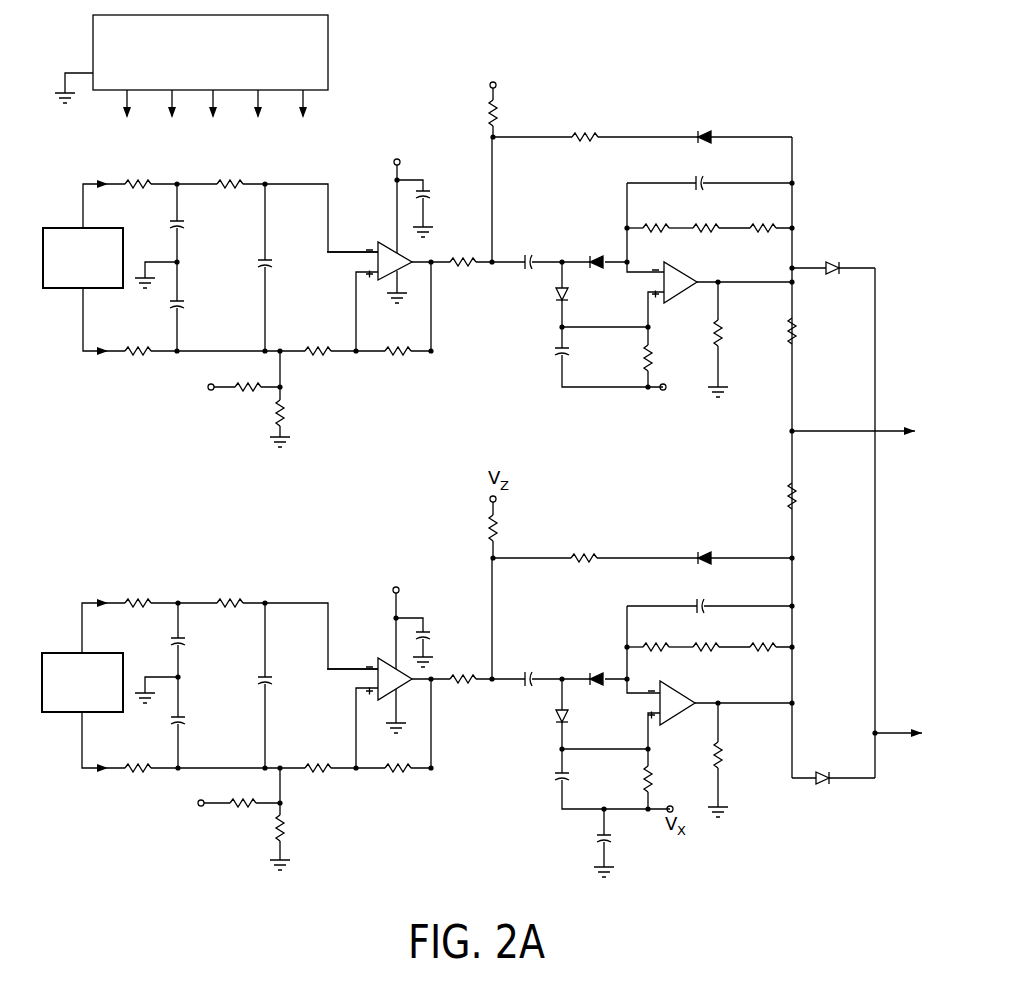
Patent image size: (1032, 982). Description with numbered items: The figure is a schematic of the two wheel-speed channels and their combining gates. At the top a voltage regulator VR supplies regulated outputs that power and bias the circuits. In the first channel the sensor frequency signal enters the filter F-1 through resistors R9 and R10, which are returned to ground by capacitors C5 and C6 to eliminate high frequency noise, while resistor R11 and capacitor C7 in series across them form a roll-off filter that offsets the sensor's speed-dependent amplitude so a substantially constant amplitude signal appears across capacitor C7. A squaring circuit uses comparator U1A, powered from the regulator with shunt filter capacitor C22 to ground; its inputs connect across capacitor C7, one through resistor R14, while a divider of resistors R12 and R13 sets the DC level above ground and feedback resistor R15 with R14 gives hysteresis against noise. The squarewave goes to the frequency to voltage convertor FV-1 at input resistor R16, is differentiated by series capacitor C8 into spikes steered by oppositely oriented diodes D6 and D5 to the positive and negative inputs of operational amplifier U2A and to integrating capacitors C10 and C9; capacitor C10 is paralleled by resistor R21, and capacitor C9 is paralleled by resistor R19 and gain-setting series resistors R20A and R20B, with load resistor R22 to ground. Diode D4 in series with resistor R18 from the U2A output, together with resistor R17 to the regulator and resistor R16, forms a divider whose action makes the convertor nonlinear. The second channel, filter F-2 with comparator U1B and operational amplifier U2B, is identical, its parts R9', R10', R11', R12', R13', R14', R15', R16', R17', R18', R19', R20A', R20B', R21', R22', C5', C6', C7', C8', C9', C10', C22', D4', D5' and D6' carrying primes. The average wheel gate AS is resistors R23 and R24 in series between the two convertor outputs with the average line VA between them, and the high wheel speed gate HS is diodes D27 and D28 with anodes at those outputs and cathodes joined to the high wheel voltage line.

The voltage regulator VR is at (328, 50).
The filter F-1 is at (267, 292).
The filter F-2 is at (267, 698).
The frequency to voltage convertor FV-1 is at (639, 228).
The resistor R9 is at (139, 175).
The resistor R10 is at (138, 362).
The resistor R11 is at (231, 175).
The resistor R12 is at (297, 399).
The resistor R13 is at (244, 398).
The resistor R14 is at (318, 362).
The resistor R15 is at (393, 362).
The input resistor R16 is at (461, 304).
The resistor R17 is at (513, 112).
The resistor R18 is at (595, 149).
The resistor R19 is at (648, 217).
The series resistor R20A is at (694, 217).
The series resistor R20B is at (755, 217).
The resistor R21 is at (668, 357).
The resistor R22 is at (736, 339).
The resistor R23 is at (812, 331).
The resistor R24 is at (812, 496).
The capacitor C5 is at (190, 223).
The capacitor C6 is at (190, 306).
The capacitor C7 is at (278, 267).
The series capacitor C8 is at (527, 272).
The integrating capacitor C9 is at (709, 170).
The integrating capacitor C10 is at (609, 357).
The shunt filter capacitor C22 is at (433, 208).
The diode D4 is at (742, 125).
The steering diode D5 is at (594, 251).
The steering diode D6 is at (577, 294).
The diode D27 is at (832, 256).
The diode D28 is at (833, 794).
The comparator U1A is at (379, 258).
The operational amplifier U2A is at (720, 294).
The comparator U1B is at (379, 680).
The operational amplifier U2B is at (720, 715).
The resistor R9' is at (141, 594).
The resistor R10' is at (139, 779).
The resistor R11' is at (234, 594).
The resistor R12' is at (300, 819).
The resistor R13' is at (239, 814).
The resistor R14' is at (318, 779).
The resistor R15' is at (393, 779).
The input resistor R16' is at (461, 721).
The resistor R17' is at (515, 530).
The resistor R18' is at (595, 570).
The resistor R19' is at (649, 637).
The series resistor R20A' is at (697, 637).
The series resistor R20B' is at (755, 637).
The resistor R21' is at (670, 779).
The resistor R22' is at (738, 760).
The capacitor C5' is at (193, 640).
The capacitor C6' is at (193, 722).
The capacitor C7' is at (280, 685).
The series capacitor C8' is at (527, 689).
The integrating capacitor C9' is at (709, 594).
The integrating capacitor C10' is at (589, 779).
The shunt filter capacitor C22' is at (435, 642).
The diode D4' is at (742, 546).
The steering diode D5' is at (594, 669).
The steering diode D6' is at (579, 714).
The nonlinear average wheel speed line VA is at (852, 418).
The average wheel gate AS is at (833, 531).
The high wheel speed gate HS is at (871, 794).